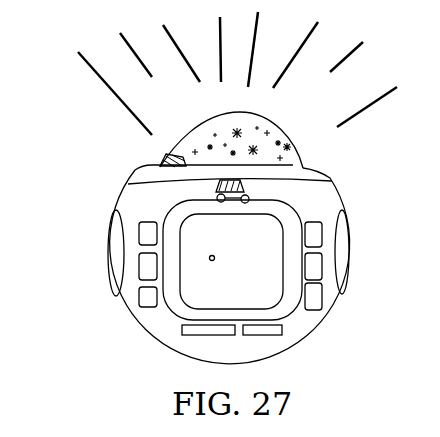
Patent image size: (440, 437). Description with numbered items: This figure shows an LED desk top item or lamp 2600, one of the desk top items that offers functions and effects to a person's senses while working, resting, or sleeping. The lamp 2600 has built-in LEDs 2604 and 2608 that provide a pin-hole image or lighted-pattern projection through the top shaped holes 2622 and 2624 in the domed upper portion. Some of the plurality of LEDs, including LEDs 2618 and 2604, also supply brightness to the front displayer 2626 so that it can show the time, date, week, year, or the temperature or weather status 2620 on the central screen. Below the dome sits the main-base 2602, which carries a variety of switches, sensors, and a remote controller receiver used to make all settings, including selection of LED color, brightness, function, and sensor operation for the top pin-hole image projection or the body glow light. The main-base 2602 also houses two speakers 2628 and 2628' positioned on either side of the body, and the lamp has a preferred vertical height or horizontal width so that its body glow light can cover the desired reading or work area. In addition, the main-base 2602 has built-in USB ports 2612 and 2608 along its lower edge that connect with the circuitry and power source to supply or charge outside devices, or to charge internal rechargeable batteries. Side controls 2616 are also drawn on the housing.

The LED desk top item or lamp 2600 is at (100, 111).
The main-base 2602 is at (347, 193).
The built-in LED 2604 is at (167, 155).
The built-in USB port 2608 is at (268, 336).
The built-in USB port 2612 is at (182, 338).
The side buttons 2616 is at (145, 316).
The built-in LED 2618 is at (250, 192).
The time/date/week/year or temperature or weather status 2620 is at (265, 274).
The top shaped hole 2622 is at (257, 123).
The top shaped hole 2624 is at (228, 116).
The front displayer 2626 is at (212, 258).
The speaker 2628 is at (385, 252).
The speaker 2628' is at (68, 253).